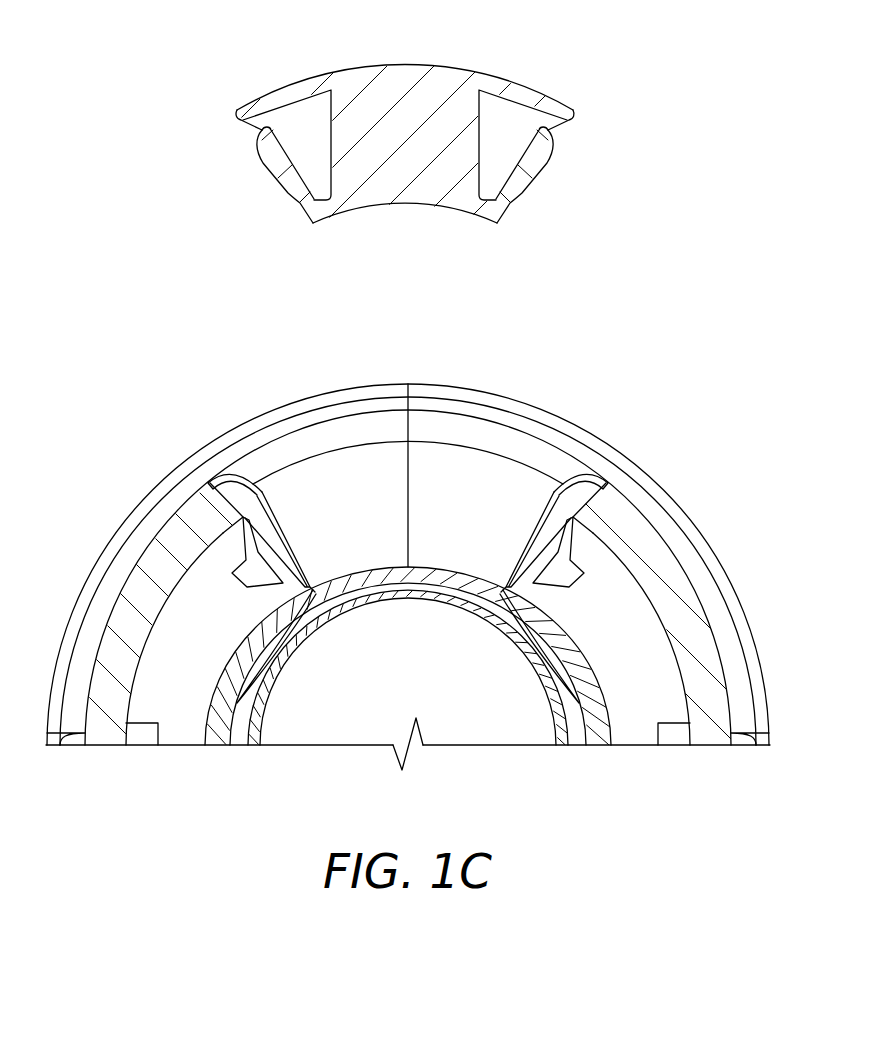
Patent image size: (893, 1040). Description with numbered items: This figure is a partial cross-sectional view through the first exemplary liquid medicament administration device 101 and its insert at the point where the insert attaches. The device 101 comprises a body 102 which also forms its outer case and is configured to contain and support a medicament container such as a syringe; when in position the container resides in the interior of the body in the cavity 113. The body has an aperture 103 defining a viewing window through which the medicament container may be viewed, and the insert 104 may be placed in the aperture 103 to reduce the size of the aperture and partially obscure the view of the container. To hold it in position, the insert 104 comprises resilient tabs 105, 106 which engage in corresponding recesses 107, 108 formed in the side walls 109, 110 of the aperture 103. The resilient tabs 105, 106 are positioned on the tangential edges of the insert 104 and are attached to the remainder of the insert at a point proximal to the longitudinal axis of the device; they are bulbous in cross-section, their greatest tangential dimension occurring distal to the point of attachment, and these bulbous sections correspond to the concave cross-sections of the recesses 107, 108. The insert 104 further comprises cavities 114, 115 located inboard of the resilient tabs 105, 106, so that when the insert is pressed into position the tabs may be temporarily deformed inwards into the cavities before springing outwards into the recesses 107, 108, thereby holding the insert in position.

The liquid medicament administration device 101 is at (118, 516).
The body 102 is at (710, 542).
The aperture 103 is at (430, 577).
The insert 104 is at (408, 63).
The resilient tab 105 is at (543, 170).
The resilient tab 106 is at (267, 168).
The recess 107 is at (540, 528).
The recess 108 is at (273, 527).
The side wall 109 is at (312, 573).
The side wall 110 is at (507, 577).
The cavity 113 is at (462, 723).
The cavity 114 is at (497, 110).
The cavity 115 is at (310, 110).